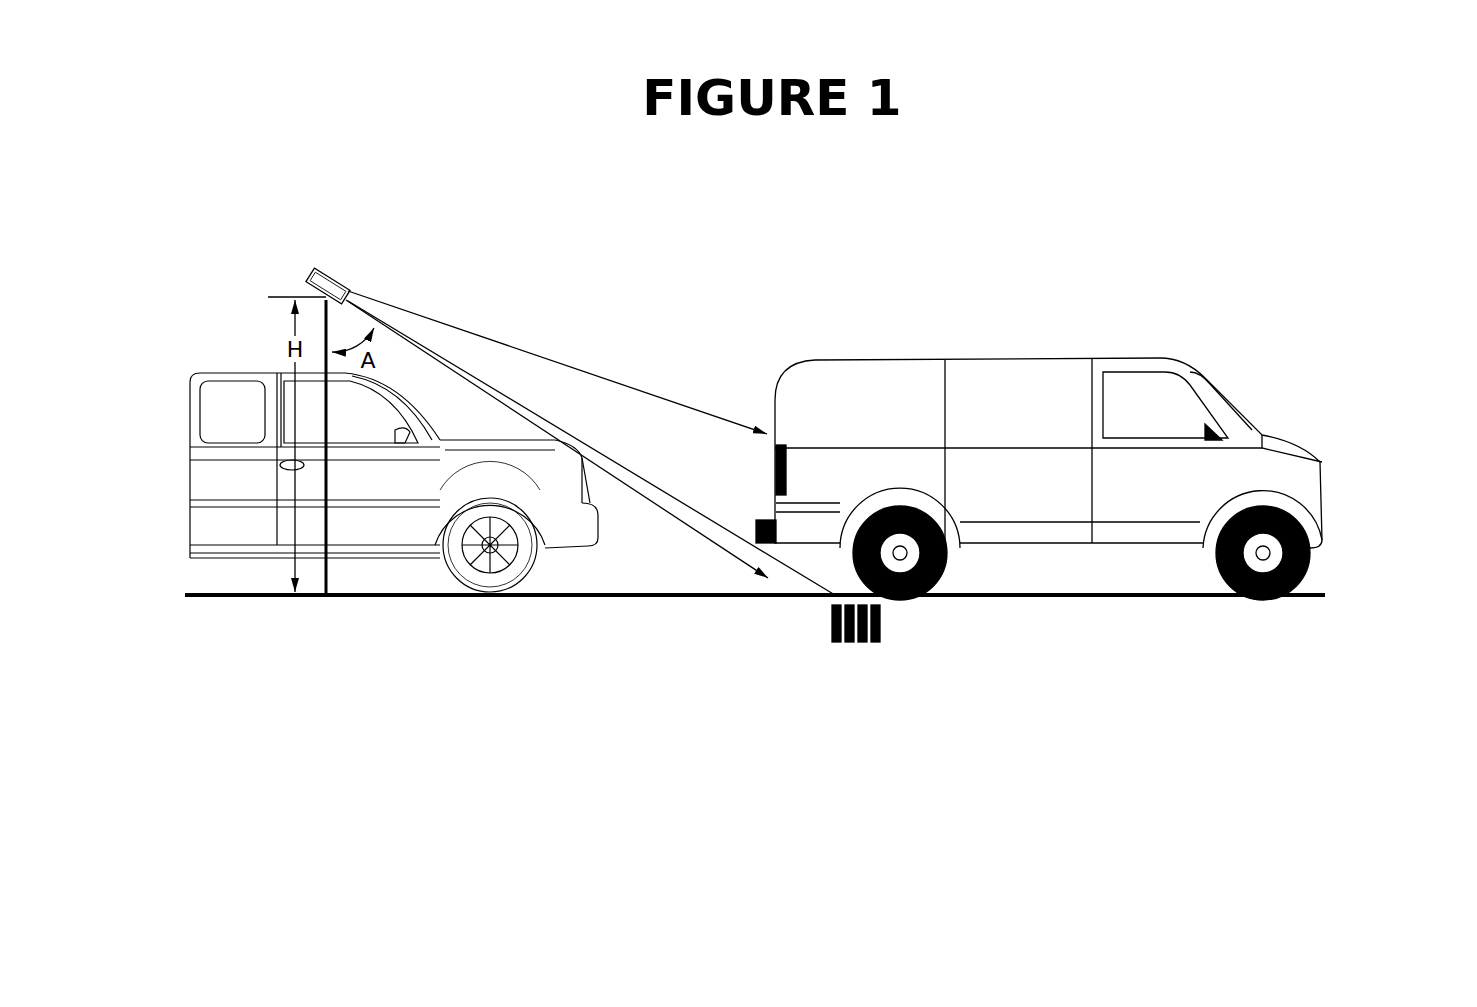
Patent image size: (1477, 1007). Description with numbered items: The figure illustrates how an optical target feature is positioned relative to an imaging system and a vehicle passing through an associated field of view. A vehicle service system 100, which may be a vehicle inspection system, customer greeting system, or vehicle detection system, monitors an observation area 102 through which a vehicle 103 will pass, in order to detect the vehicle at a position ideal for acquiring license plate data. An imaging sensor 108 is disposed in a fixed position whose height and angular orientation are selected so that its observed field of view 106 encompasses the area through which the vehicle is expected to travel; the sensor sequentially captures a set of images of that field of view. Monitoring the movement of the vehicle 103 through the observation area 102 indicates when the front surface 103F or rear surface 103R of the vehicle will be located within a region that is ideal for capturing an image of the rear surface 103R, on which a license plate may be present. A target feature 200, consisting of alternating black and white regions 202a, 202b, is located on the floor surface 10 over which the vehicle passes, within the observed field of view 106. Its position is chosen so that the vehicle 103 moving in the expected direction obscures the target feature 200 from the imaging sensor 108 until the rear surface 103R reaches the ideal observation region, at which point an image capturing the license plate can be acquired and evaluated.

The floor surface 10 is at (648, 600).
The vehicle service system 100 is at (253, 247).
The observation area 102 is at (1029, 419).
The vehicle 103 is at (1115, 356).
The rear surface 103R is at (752, 390).
The front surface 103F is at (1306, 428).
The observed field of view 106 is at (465, 364).
The imaging sensor 108 is at (340, 278).
The target feature 200 is at (849, 666).
The black region 202a is at (847, 640).
The white region 202b is at (868, 632).